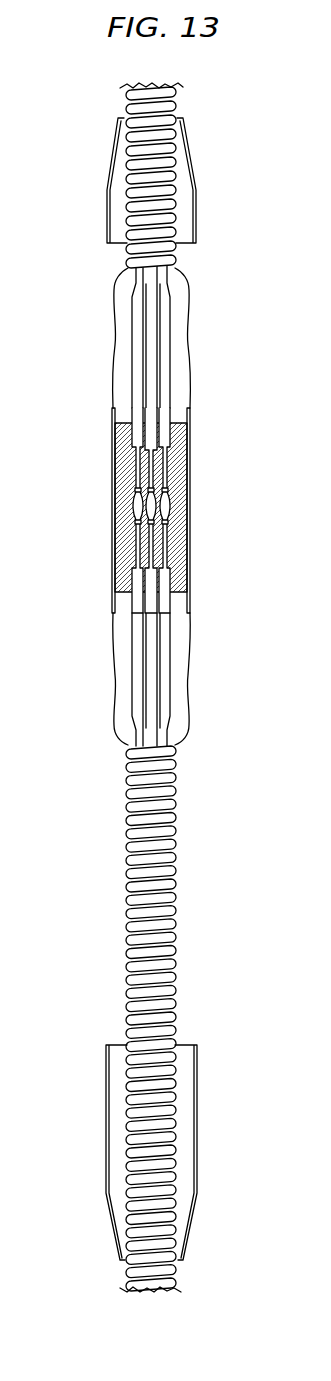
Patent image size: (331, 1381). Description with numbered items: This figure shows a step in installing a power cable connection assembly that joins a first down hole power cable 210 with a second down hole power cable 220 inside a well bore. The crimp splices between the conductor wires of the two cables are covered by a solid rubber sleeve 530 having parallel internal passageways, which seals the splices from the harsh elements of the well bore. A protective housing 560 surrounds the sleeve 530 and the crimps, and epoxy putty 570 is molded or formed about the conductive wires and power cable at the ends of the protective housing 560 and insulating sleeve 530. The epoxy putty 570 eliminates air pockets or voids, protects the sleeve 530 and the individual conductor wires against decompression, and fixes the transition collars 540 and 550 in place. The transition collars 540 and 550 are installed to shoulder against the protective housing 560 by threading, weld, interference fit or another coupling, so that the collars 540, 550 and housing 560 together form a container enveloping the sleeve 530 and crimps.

The first down hole power cable 210 is at (172, 96).
The second down hole power cable 220 is at (172, 1283).
The solid rubber sleeve 530 is at (115, 443).
The transition collar 540 is at (105, 1125).
The transition collar 550 is at (105, 203).
The protective housing 560 is at (113, 421).
The epoxy putty 570 is at (117, 311).